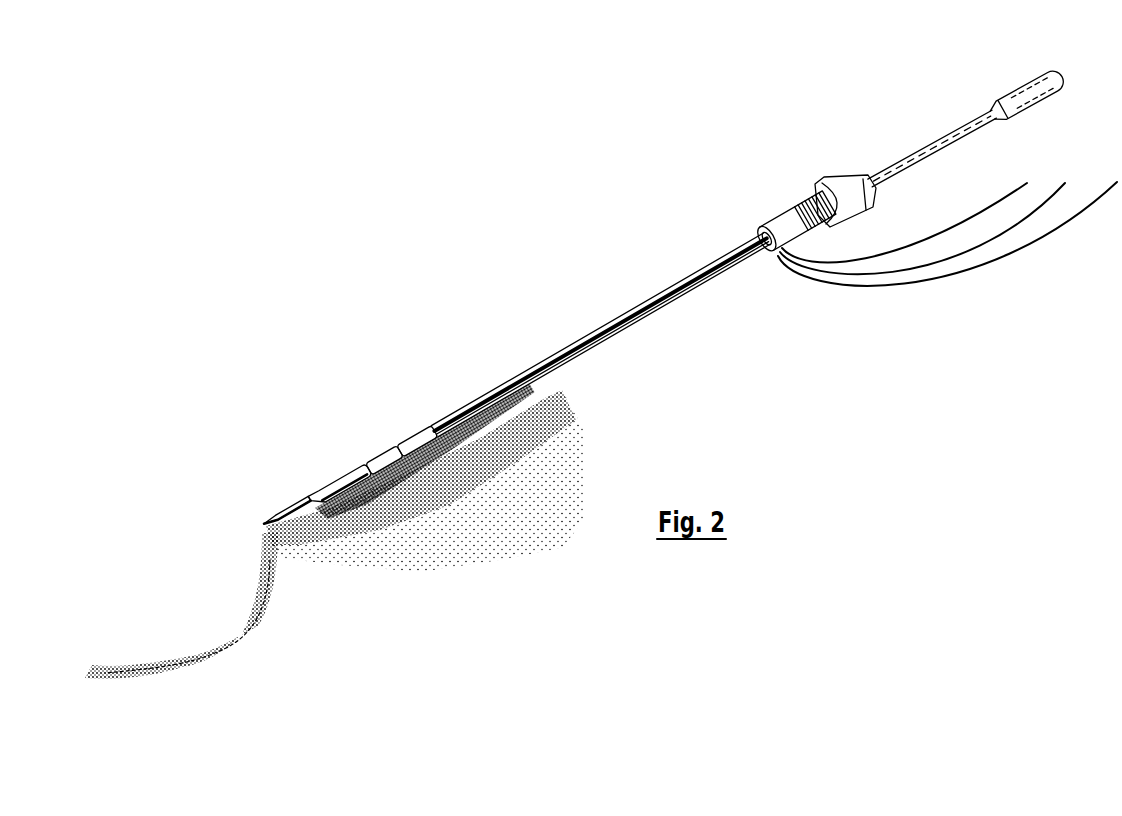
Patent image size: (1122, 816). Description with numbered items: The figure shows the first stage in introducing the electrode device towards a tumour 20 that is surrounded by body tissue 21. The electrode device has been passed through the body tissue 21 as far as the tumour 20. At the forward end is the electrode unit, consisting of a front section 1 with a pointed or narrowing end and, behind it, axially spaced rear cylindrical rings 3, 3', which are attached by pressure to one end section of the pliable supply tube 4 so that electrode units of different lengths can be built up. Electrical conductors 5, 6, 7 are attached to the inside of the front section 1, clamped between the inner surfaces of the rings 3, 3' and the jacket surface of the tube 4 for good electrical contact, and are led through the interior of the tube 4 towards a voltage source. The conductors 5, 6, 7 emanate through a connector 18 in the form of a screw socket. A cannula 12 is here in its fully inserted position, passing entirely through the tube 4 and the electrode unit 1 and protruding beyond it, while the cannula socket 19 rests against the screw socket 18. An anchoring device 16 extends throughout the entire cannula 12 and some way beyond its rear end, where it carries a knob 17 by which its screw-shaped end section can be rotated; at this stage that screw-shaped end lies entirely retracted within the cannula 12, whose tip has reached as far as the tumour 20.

The front section 1 is at (331, 482).
The rear cylindrical ring 3 is at (361, 391).
The rear cylindrical ring 3' is at (392, 369).
The tube 4 is at (630, 316).
The electrical conductor 5 is at (935, 280).
The electrical conductor 6 is at (972, 250).
The electrical conductor 7 is at (1005, 207).
The cannula 12 is at (287, 510).
The anchoring device 16 is at (918, 156).
The knob 17 is at (1015, 102).
The connector 18 is at (776, 227).
The cannula socket 19 is at (832, 186).
The tumour 20 is at (198, 640).
The body tissue 21 is at (513, 540).